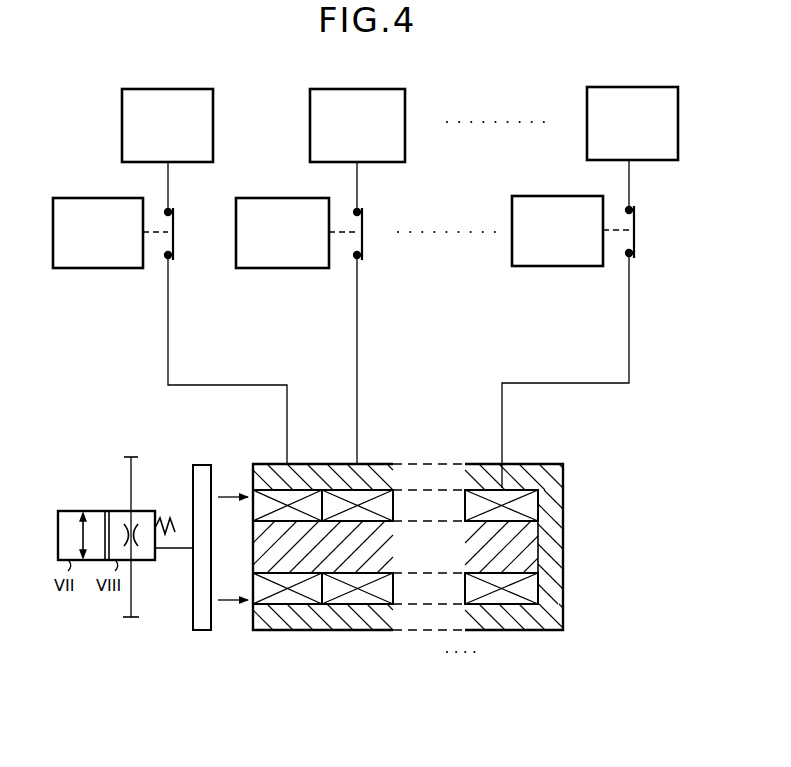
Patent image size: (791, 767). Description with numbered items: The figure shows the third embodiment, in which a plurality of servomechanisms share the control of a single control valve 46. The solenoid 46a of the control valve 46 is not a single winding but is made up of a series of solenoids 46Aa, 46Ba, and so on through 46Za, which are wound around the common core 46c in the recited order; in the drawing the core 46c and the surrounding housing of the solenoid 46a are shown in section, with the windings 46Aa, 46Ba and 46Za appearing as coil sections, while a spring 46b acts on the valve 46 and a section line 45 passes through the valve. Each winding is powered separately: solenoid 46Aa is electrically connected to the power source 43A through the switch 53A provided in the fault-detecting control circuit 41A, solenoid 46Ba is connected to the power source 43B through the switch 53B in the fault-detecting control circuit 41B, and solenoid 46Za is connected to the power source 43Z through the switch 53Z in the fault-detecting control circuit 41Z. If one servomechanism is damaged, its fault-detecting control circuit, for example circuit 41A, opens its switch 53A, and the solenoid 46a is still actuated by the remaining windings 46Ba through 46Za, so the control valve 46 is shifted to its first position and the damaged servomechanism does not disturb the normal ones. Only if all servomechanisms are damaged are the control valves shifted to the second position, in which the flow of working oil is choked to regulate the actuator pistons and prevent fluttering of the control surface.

The power source 43A is at (190, 138).
The power source 43B is at (380, 138).
The power source 43Z is at (655, 136).
The fault-detecting control circuit 41A is at (76, 244).
The fault-detecting control circuit 41B is at (260, 244).
The fault-detecting control circuit 41Z is at (535, 242).
The switch 53A is at (176, 248).
The switch 53B is at (365, 248).
The switch 53Z is at (637, 246).
The section line 45 is at (131, 487).
The control valve 46 is at (84, 509).
The solenoid 46a is at (553, 475).
The spring 46b is at (160, 521).
The core 46c is at (528, 537).
The solenoid 46Aa is at (308, 604).
The solenoid 46Ba is at (372, 604).
The solenoid 46Za is at (498, 604).